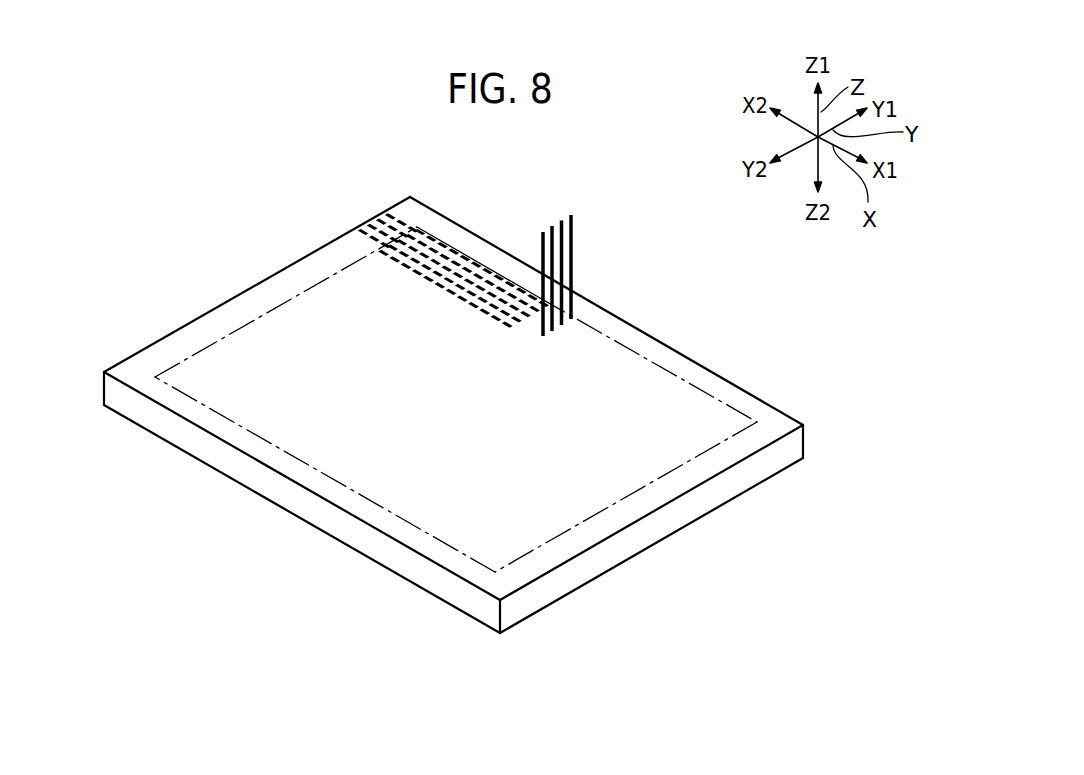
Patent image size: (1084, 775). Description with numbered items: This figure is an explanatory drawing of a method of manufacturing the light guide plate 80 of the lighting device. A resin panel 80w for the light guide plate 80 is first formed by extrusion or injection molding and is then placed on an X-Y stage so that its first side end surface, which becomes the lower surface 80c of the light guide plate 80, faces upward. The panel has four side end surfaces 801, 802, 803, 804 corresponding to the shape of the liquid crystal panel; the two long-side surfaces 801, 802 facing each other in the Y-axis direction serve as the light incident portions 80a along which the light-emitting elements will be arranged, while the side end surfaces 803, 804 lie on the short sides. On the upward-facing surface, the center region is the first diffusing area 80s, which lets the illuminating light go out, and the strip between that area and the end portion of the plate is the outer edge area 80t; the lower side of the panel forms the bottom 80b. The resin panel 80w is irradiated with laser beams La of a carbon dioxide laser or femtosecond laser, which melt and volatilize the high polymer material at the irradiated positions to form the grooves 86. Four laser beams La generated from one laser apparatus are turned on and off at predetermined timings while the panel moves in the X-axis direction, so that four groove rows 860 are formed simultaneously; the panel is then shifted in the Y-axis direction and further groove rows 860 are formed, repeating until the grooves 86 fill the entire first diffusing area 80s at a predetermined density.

The light guide plate 80 is at (508, 401).
The resin panel 80w is at (796, 394).
The outer edge area 80t is at (695, 375).
The bottom surface 80b is at (593, 583).
The lower surface 80c is at (650, 497).
The first diffusing area 80s is at (263, 440).
The light incident portion 80a is at (453, 415).
The side end surface 801 is at (618, 315).
The side end surface 802 is at (315, 508).
The side end surface 803 is at (763, 472).
The side end surface 804 is at (237, 295).
The groove row 860 is at (475, 244).
The groove 86 is at (438, 240).
The laser beam La is at (544, 292).